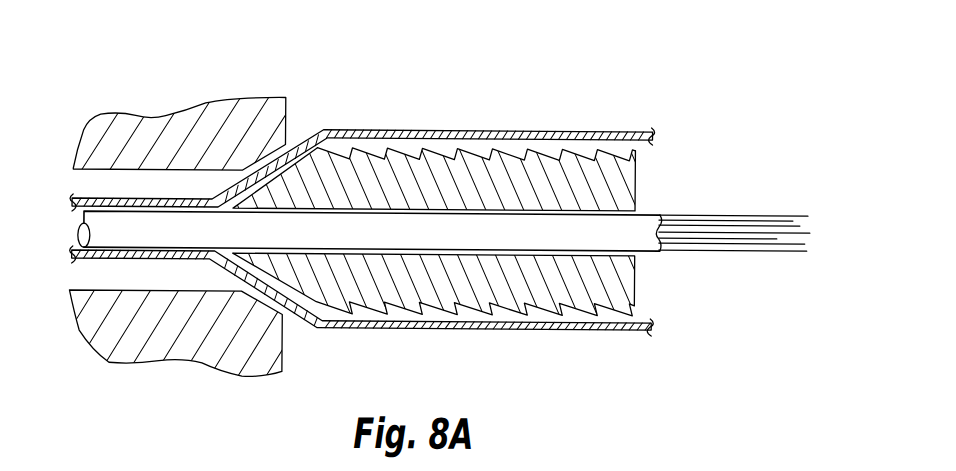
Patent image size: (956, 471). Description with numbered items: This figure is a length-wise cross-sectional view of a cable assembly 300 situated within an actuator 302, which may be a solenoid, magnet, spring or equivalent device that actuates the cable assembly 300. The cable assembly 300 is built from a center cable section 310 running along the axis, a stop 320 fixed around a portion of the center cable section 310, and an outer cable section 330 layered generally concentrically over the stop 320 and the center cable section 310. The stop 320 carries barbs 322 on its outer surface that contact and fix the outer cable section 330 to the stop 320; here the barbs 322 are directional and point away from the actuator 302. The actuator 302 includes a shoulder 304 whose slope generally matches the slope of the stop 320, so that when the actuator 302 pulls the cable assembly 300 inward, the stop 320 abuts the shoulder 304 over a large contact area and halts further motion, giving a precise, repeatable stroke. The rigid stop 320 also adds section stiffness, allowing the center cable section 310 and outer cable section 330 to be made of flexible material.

The cable assembly 300 is at (425, 198).
The actuator 302 is at (180, 92).
The shoulder 304 is at (289, 151).
The center cable section 310 is at (633, 234).
The stop 320 is at (507, 175).
The barbs 322 is at (412, 148).
The outer cable section 330 is at (437, 326).